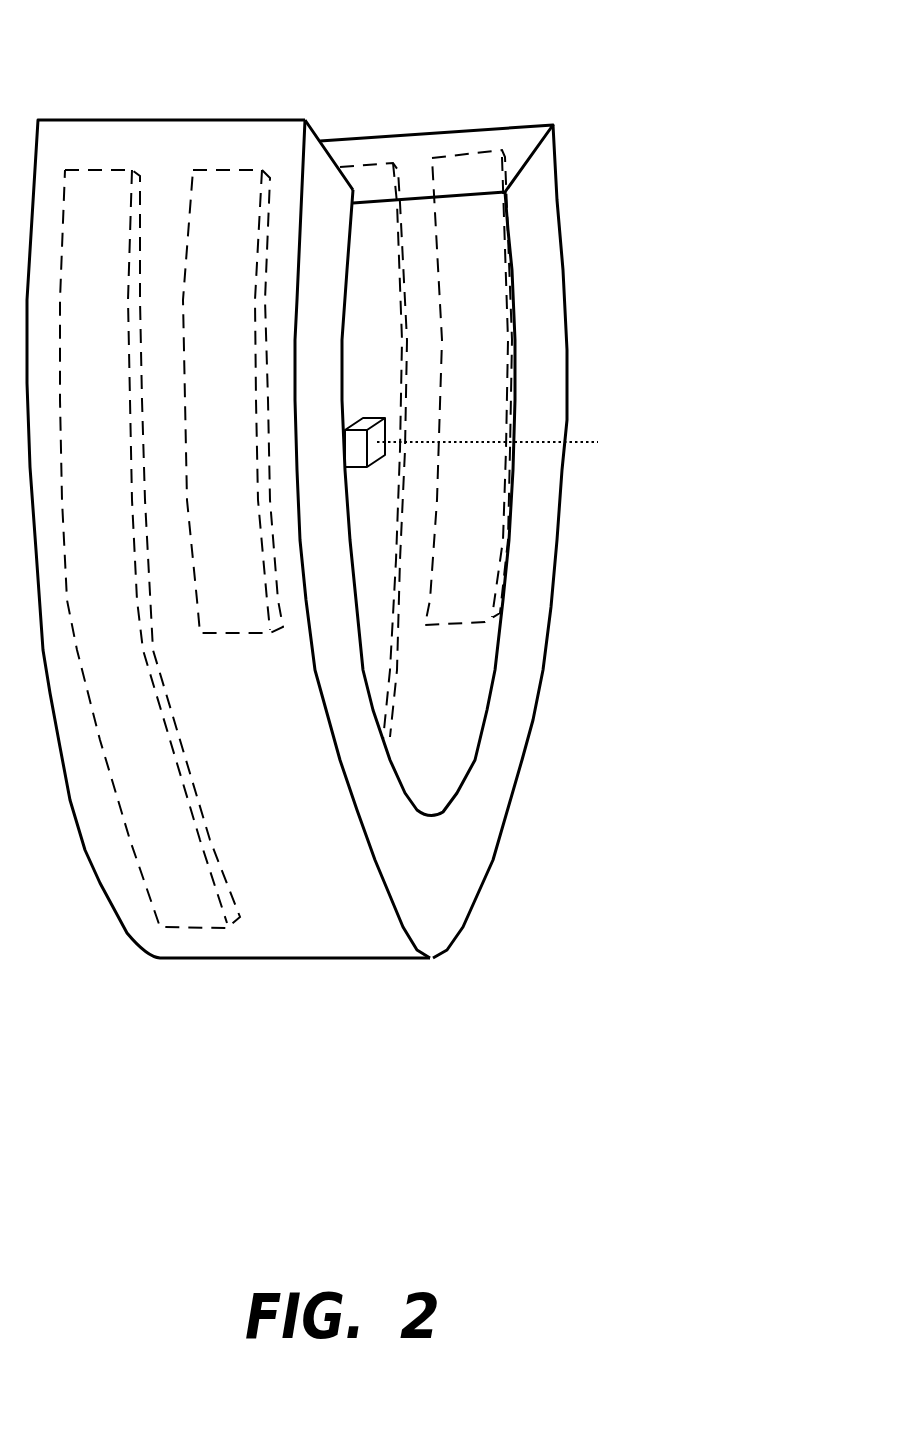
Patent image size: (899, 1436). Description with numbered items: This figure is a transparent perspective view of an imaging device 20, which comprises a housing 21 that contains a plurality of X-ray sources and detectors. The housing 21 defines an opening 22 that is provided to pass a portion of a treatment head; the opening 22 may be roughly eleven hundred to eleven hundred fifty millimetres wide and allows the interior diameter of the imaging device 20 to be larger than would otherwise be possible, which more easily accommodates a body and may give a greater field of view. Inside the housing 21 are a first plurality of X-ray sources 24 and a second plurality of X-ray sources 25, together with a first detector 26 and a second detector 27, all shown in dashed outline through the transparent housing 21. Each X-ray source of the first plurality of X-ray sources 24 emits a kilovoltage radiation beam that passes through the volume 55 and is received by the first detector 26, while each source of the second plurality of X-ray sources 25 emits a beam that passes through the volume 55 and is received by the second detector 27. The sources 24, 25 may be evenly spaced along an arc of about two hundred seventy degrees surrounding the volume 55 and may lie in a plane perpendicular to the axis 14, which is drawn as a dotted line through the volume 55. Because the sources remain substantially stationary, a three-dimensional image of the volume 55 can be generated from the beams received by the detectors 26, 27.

The axis 14 is at (580, 442).
The imaging device 20 is at (145, 42).
The housing 21 is at (450, 897).
The opening 22 is at (371, 116).
The first plurality of X-ray sources 24 is at (485, 236).
The second plurality of X-ray sources 25 is at (237, 241).
The first detector 26 is at (113, 238).
The second detector 27 is at (388, 520).
The volume 55 is at (353, 422).